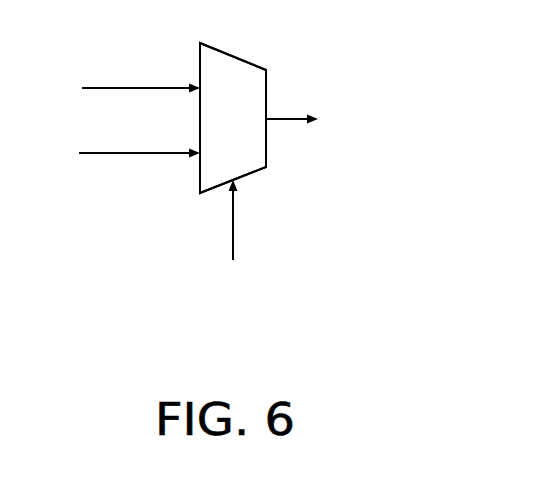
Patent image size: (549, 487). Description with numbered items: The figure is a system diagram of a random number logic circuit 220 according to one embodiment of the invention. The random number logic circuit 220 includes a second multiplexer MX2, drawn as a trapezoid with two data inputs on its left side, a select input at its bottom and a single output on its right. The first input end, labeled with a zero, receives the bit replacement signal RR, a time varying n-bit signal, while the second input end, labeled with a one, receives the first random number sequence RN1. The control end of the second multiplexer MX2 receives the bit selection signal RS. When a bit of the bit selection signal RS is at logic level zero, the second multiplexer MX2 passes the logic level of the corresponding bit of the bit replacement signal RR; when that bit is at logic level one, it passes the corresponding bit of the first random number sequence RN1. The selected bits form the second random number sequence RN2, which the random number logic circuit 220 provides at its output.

The random number logic circuit 220 is at (488, 335).
The second multiplexer MX2 is at (233, 53).
The bit replacement signal RR is at (123, 68).
The first random number sequence RN1 is at (119, 136).
The second random number sequence RN2 is at (355, 120).
The bit selection signal RS is at (266, 241).